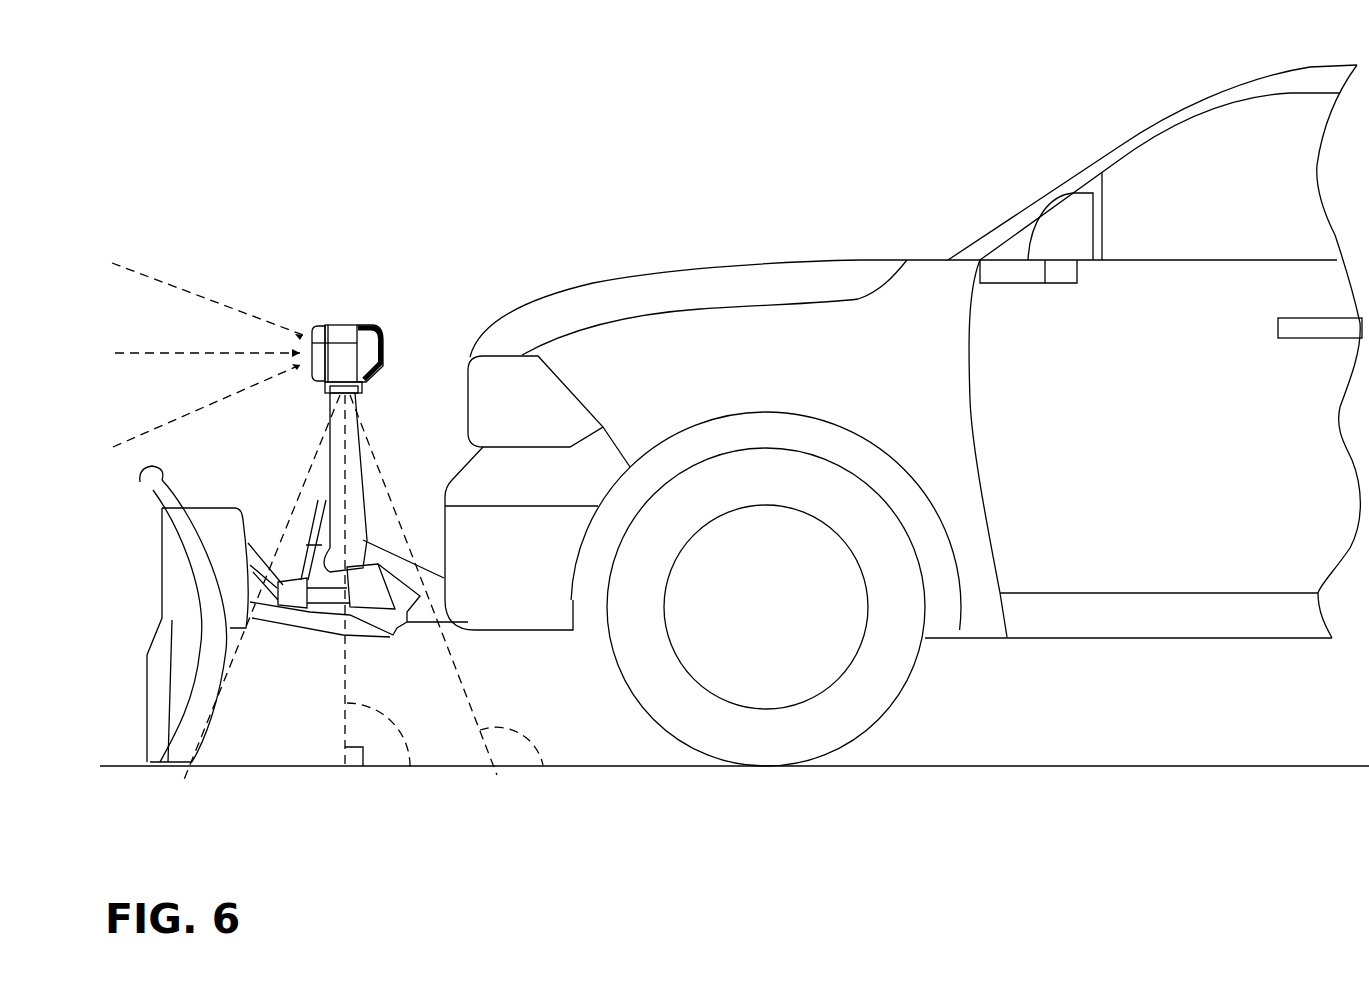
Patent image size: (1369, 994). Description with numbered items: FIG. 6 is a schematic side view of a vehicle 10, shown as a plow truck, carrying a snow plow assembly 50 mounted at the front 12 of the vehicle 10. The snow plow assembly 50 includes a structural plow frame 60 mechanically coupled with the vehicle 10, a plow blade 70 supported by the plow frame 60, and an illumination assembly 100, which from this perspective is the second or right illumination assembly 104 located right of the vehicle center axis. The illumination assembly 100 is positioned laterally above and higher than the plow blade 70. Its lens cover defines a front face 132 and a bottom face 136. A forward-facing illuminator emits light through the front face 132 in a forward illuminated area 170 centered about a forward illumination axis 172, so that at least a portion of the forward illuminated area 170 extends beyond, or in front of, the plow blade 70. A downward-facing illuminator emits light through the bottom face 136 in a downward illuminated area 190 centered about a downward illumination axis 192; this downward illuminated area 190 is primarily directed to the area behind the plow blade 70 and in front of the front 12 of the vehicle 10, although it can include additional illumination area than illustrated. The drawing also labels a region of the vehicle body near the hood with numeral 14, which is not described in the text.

The vehicle 10 is at (980, 42).
The front 12 is at (494, 250).
The headlight 14 is at (515, 398).
The snow plow assembly 50 is at (247, 158).
The plow frame 60 is at (358, 398).
The plow blade 70 is at (178, 512).
The illumination assembly 100 is at (397, 287).
The second illumination assembly 104 is at (348, 285).
The front face 132 is at (305, 328).
The bottom face 136 is at (332, 397).
The forward illuminated area 170 is at (137, 273).
The forward illumination axis 172 is at (197, 350).
The downward illuminated area 190 is at (543, 765).
The downward illumination axis 192 is at (410, 767).